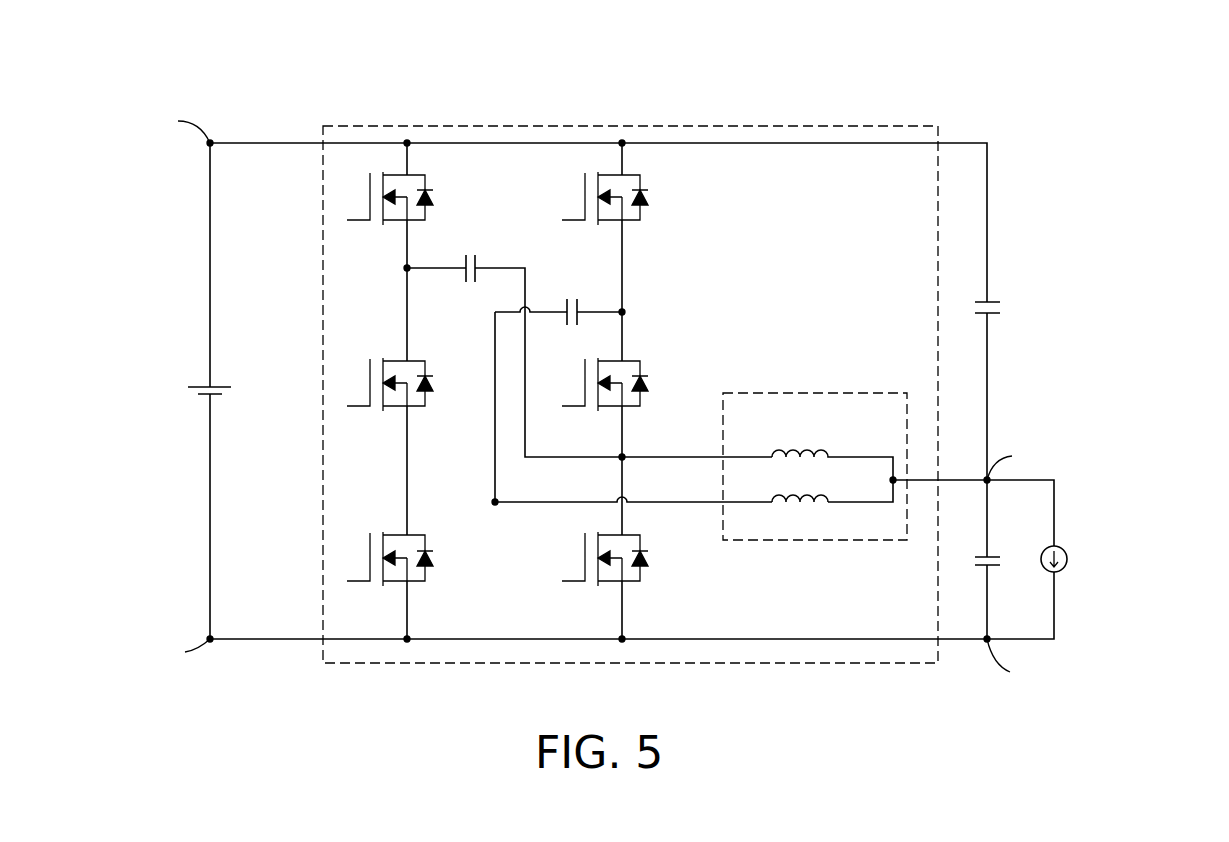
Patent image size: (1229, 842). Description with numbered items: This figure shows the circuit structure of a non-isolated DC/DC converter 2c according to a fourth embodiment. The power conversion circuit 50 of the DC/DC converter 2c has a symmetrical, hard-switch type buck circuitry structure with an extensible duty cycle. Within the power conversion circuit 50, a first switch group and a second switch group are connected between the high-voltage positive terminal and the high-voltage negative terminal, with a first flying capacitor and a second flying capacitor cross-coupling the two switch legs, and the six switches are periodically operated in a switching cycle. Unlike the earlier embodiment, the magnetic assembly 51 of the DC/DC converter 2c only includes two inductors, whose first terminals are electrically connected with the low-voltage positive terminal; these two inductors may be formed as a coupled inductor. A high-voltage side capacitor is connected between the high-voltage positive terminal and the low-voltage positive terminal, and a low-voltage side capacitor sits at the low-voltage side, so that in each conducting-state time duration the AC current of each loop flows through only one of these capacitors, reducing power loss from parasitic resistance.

The DC/DC converter 2c is at (1200, 87).
The power conversion circuit 50 is at (618, 126).
The magnetic assembly 51 is at (815, 393).